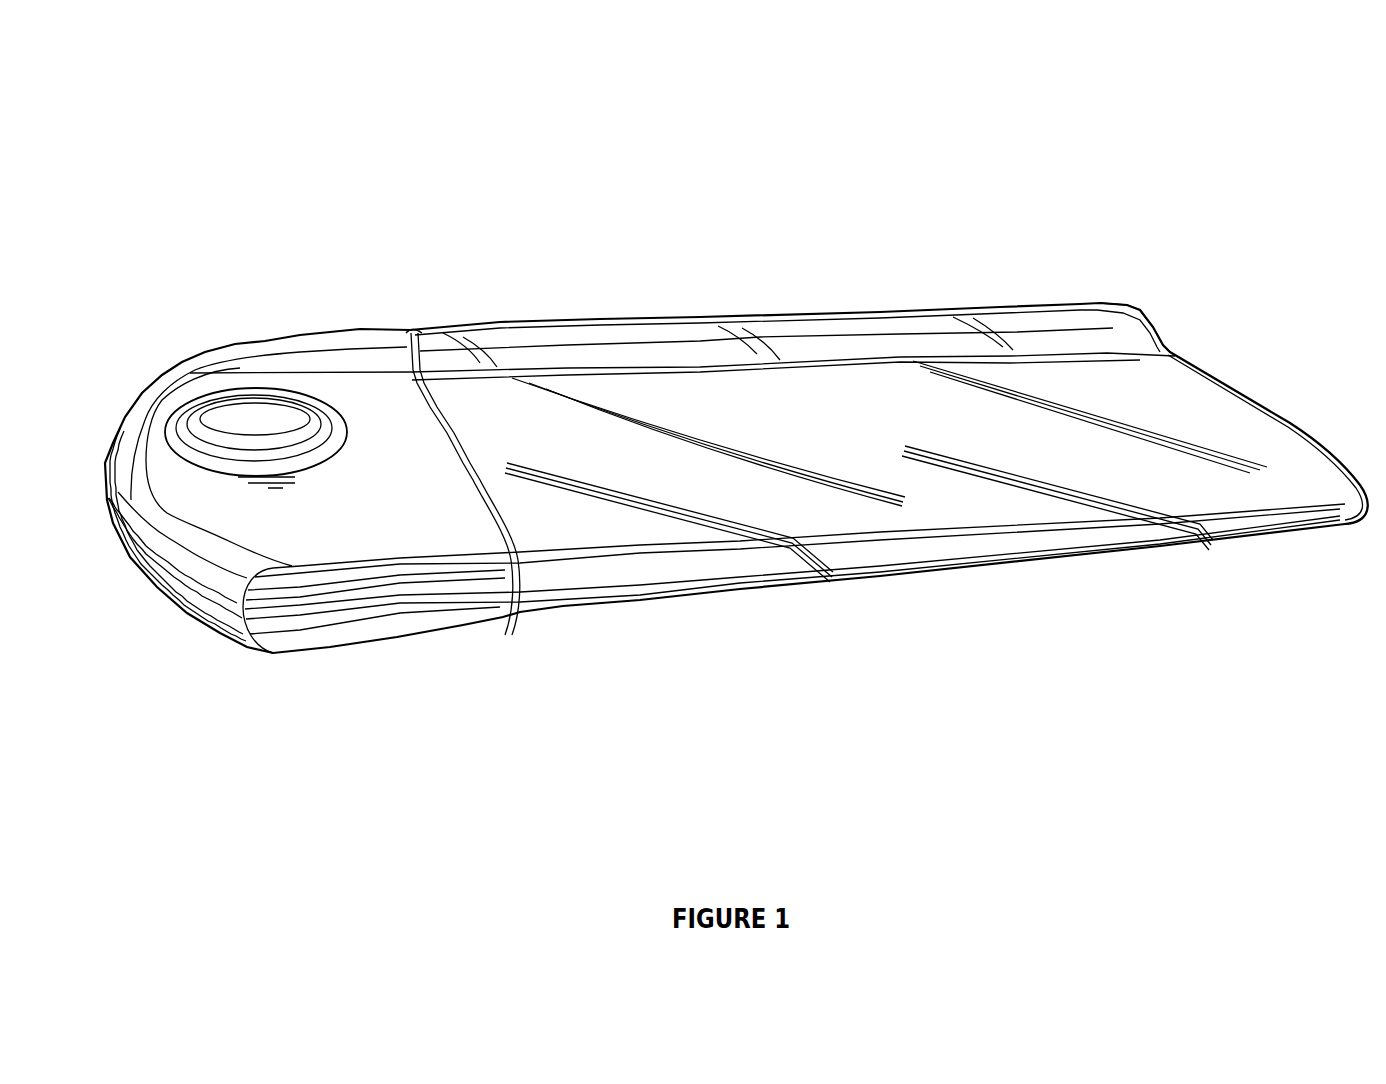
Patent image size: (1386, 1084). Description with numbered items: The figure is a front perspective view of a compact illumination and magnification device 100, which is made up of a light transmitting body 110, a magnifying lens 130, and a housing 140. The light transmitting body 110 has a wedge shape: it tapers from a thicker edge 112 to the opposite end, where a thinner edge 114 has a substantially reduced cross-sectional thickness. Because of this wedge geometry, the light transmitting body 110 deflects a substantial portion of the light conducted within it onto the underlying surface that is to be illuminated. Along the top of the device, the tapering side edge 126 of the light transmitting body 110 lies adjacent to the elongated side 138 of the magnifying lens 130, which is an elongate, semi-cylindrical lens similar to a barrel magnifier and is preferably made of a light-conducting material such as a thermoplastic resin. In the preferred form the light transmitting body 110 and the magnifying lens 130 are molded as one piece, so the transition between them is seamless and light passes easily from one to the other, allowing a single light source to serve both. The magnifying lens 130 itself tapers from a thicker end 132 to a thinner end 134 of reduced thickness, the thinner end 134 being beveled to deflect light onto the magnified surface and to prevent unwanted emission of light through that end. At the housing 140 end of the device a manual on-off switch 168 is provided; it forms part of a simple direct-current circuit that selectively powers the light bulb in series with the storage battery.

The compact illumination and magnification device 100 is at (962, 186).
The light transmitting body 110 is at (763, 476).
The thicker edge 112 is at (484, 520).
The thinner edge 114 is at (1335, 467).
The tapering side edge 126 is at (1013, 363).
The magnifying lens 130 is at (696, 342).
The thicker end 132 is at (414, 337).
The thinner end 134 is at (1148, 318).
The elongated side 138 is at (1006, 356).
The housing 140 is at (327, 518).
The manual on-off switch 168 is at (253, 418).